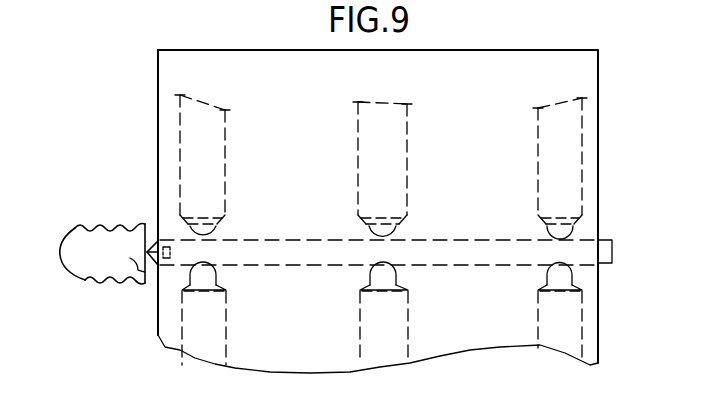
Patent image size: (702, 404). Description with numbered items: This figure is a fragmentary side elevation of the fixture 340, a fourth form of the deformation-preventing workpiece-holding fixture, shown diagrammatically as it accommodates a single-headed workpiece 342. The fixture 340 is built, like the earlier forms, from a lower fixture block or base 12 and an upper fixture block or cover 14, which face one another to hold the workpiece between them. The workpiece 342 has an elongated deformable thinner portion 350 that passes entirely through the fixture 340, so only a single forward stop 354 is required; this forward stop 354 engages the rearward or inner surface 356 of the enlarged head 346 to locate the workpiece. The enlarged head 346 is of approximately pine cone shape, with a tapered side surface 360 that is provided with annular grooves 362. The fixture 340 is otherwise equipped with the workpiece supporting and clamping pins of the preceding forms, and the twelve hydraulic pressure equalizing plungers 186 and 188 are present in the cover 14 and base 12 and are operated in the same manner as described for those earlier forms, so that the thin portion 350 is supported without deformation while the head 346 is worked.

The fixture 340 is at (156, 62).
The upper fixture block or cover 14 is at (156, 106).
The lower fixture block or base 12 is at (156, 340).
The elongated deformable thinner portion 350 is at (289, 240).
The hydraulic pressure equalizing plunger 188 is at (225, 165).
The hydraulic pressure equalizing plunger 186 is at (226, 320).
The enlarged head 346 is at (97, 222).
The annular grooves 362 is at (85, 282).
The tapered side surface 360 is at (72, 224).
The rearward or inner surface 356 is at (119, 254).
The forward stop 354 is at (153, 270).
The single-headed workpiece 342 is at (153, 237).